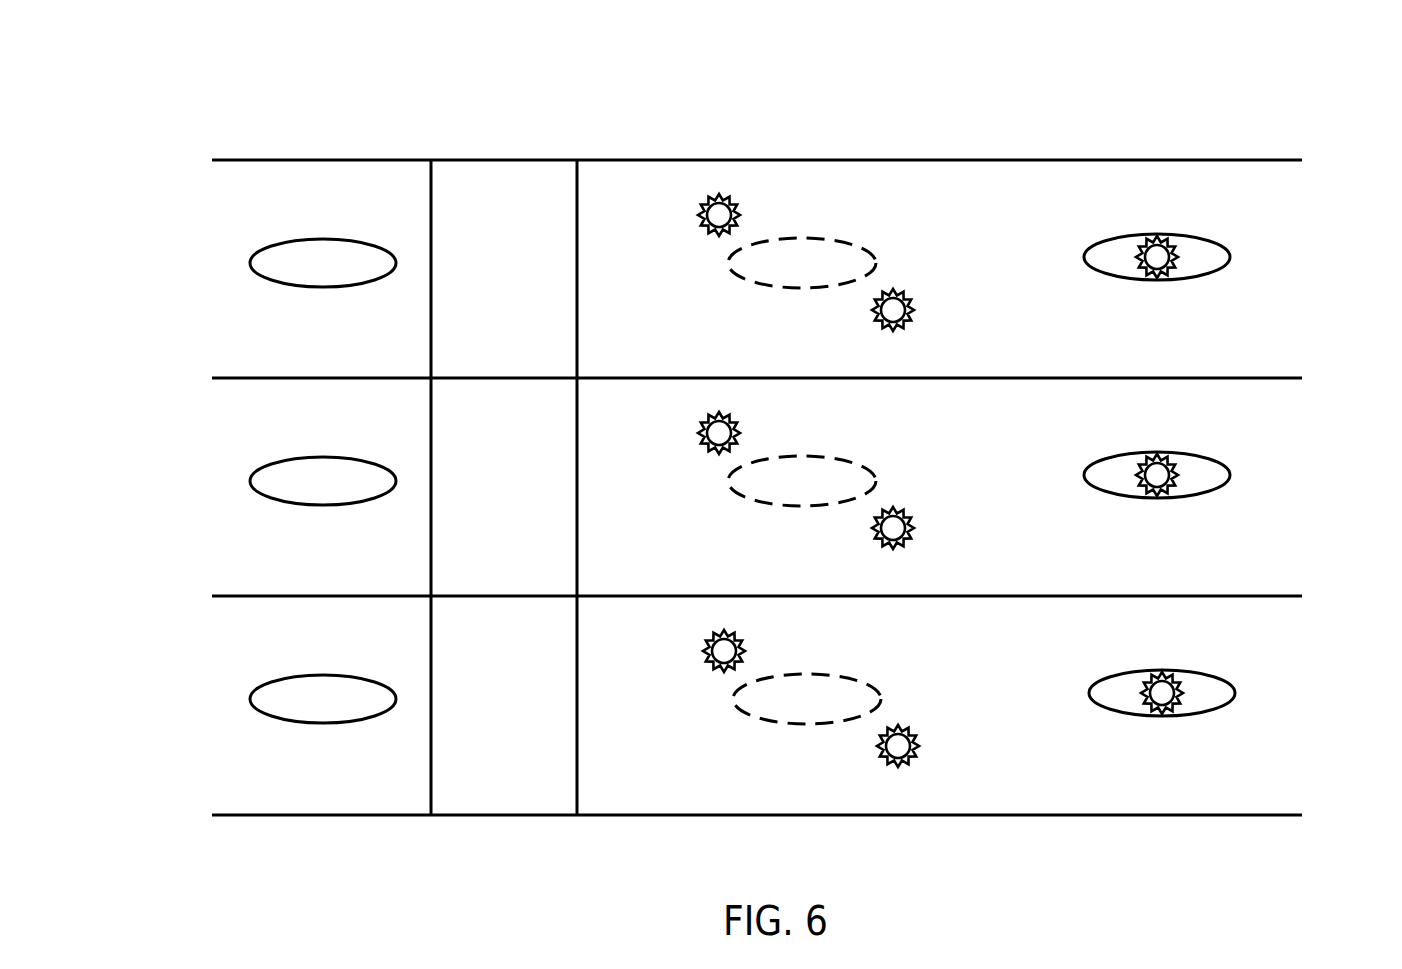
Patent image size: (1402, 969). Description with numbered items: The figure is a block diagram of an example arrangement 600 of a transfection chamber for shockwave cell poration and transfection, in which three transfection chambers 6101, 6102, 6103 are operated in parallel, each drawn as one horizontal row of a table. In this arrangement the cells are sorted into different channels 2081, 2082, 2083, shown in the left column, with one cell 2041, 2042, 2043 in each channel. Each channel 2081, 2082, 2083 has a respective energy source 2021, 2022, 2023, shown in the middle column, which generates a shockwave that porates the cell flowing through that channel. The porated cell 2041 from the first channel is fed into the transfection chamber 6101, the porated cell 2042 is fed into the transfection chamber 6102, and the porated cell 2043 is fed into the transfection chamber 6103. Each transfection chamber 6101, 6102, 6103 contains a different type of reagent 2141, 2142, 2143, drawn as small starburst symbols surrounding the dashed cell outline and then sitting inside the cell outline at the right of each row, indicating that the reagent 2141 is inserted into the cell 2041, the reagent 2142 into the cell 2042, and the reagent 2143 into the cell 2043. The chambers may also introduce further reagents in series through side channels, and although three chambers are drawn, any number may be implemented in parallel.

The arrangement 600 is at (141, 44).
The channel 2081 is at (339, 210).
The channel 2082 is at (314, 414).
The channel 2083 is at (314, 632).
The energy source 2021 is at (529, 291).
The energy source 2022 is at (504, 495).
The energy source 2023 is at (504, 713).
The cell 2041 is at (318, 287).
The cell 2042 is at (740, 511).
The cell 2043 is at (742, 729).
The reagent 2141 is at (737, 207).
The reagent 2142 is at (972, 488).
The reagent 2143 is at (977, 706).
The transfection chamber 6101 is at (1265, 189).
The transfection chamber 6102 is at (1322, 395).
The transfection chamber 6103 is at (1327, 613).